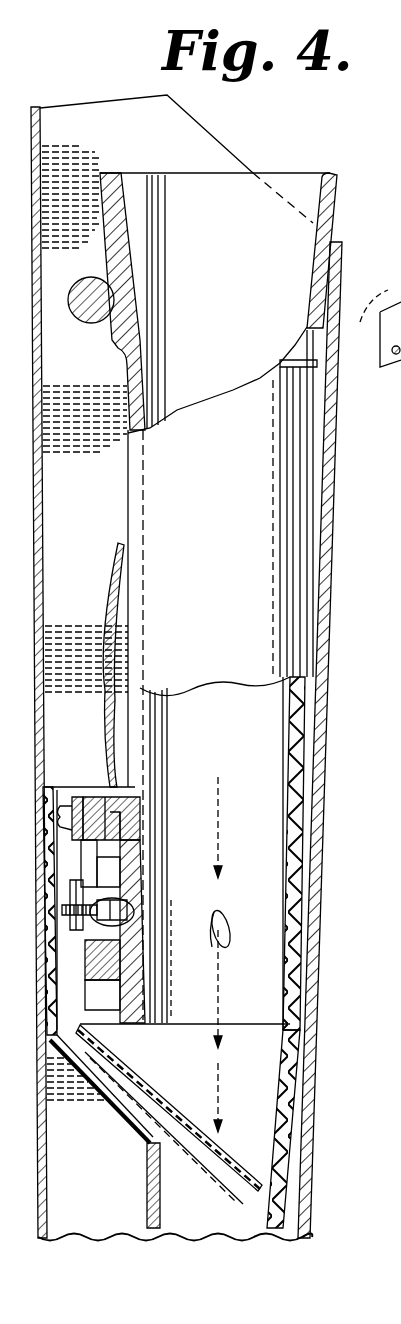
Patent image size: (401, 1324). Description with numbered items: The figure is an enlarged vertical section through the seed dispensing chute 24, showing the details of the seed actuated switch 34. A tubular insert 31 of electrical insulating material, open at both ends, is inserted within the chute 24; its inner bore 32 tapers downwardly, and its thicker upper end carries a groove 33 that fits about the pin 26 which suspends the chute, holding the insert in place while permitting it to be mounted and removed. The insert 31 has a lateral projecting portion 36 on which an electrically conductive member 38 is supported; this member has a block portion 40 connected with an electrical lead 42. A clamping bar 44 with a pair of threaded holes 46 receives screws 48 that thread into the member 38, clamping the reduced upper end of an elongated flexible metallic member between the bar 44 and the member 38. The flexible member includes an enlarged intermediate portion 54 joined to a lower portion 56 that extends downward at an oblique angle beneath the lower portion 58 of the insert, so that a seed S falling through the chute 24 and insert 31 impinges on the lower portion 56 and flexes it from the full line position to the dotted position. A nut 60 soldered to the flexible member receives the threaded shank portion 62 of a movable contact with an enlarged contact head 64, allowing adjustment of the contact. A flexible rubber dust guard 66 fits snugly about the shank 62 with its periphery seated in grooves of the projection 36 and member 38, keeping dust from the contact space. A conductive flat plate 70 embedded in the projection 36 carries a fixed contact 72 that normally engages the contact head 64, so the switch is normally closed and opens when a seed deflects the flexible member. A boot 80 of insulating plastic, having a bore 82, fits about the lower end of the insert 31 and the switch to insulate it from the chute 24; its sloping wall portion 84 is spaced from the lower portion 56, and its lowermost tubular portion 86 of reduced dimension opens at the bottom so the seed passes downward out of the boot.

The seed dispensing chute 24 is at (331, 557).
The pin 26 is at (88, 323).
The tubular member (insert) 31 is at (312, 463).
The inner bore 32 is at (290, 737).
The groove 33 is at (99, 268).
The seed actuated switch 34 is at (100, 1068).
The lateral projecting portion 36 is at (131, 987).
The electrically conductive member 38 is at (100, 788).
The block portion 40 is at (137, 802).
The electrical lead 42 is at (110, 587).
The clamping bar 44 is at (84, 800).
The threaded holes 46 is at (395, 362).
The screws 48 is at (62, 812).
The enlarged intermediate portion 54 is at (102, 996).
The lower portion 56 is at (169, 1101).
The lower portion of insert 58 is at (141, 1028).
The nut 60 is at (73, 886).
The threaded shank portion 62 is at (116, 906).
The contact head 64 is at (120, 950).
The flexible dust guard 66 is at (106, 880).
The flat plate 70 is at (110, 862).
The fixed contact 72 is at (112, 924).
The boot 80 is at (307, 966).
The bore 82 is at (287, 1072).
The sloping wall portion 84 is at (124, 1121).
The lowermost tubular portion 86 is at (146, 1216).
The seed S is at (233, 914).